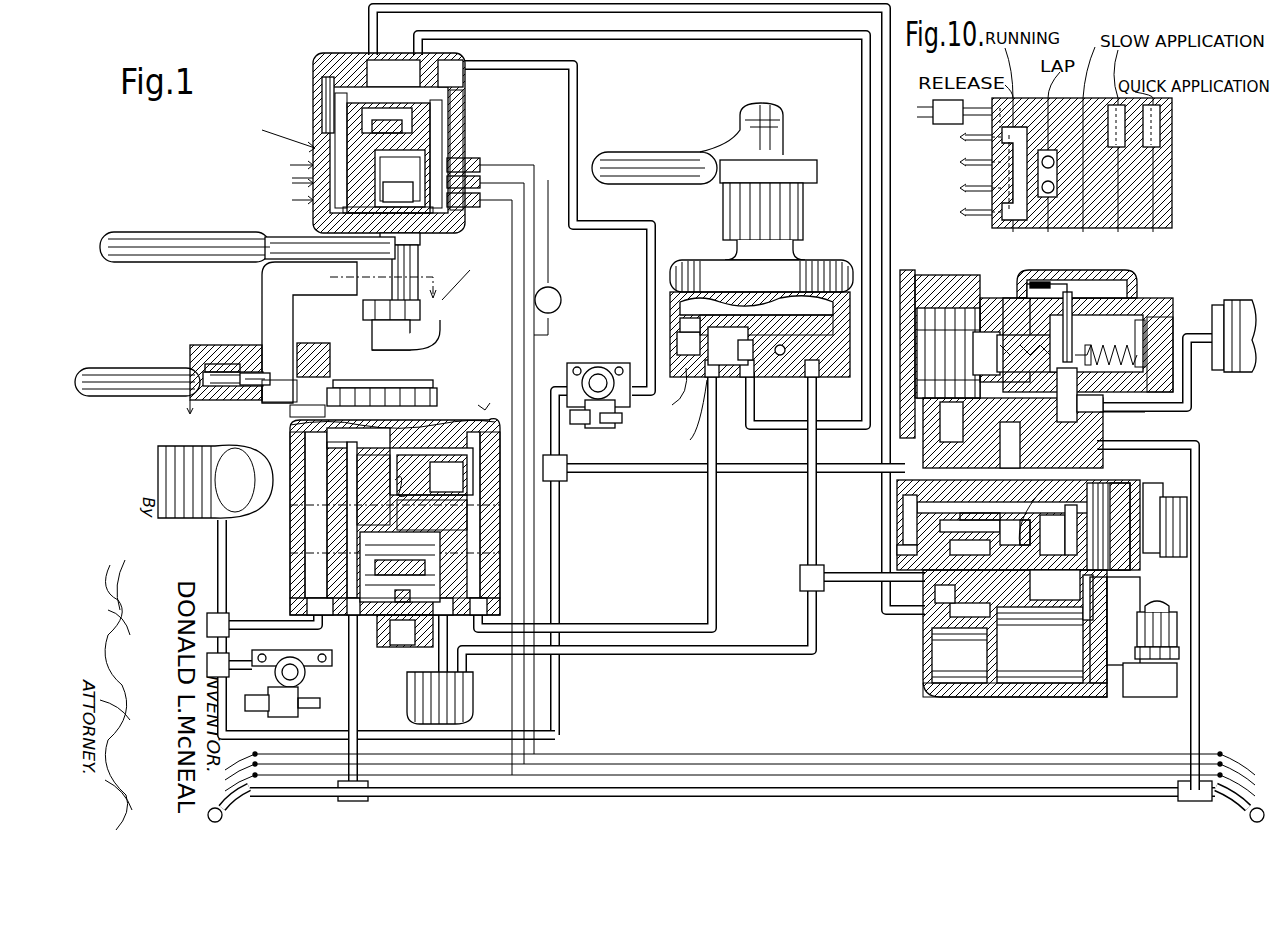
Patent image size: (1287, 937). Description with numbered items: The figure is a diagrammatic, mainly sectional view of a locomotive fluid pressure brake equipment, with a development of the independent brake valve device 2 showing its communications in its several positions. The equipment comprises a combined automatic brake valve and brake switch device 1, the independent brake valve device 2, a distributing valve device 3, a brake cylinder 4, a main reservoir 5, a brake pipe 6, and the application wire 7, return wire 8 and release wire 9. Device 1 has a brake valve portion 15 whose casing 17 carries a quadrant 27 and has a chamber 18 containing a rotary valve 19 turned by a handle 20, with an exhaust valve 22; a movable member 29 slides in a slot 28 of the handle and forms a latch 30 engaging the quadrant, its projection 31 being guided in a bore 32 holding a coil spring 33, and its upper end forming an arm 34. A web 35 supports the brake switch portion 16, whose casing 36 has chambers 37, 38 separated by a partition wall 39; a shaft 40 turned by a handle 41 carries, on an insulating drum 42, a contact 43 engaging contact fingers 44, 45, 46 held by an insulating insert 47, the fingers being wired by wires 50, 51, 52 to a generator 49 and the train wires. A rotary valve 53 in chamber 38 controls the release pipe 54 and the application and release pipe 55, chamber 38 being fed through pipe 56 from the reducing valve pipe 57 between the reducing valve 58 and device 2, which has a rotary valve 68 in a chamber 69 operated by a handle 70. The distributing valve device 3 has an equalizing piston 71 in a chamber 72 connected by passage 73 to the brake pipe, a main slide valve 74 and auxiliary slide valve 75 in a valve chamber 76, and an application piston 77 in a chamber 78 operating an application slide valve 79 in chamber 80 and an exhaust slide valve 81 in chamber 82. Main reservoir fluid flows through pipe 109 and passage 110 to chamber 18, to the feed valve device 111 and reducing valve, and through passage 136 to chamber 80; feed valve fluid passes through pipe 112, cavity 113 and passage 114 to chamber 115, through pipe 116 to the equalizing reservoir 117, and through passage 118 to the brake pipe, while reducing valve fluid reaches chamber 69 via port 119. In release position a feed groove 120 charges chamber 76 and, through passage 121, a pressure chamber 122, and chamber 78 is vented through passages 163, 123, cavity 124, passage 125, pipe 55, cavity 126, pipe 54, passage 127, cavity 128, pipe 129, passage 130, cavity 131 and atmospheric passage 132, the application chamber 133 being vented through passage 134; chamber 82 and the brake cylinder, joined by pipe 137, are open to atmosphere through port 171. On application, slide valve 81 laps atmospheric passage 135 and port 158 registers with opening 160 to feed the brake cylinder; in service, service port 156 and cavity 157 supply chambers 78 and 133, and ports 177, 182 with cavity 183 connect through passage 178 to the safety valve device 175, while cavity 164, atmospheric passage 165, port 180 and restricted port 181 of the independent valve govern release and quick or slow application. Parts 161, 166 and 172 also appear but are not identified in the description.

In FIG. 1, the combined automatic brake valve and brake switch device 1 is at (460, 283).
In FIG. 1, the independent brake valve device 2 is at (813, 200).
In FIG. 1, the distributing valve device 3 is at (1055, 275).
In FIG. 1, the brake cylinder 4 is at (1240, 300).
In FIG. 1, the main reservoir 5 is at (180, 458).
In FIG. 1, the brake pipe 6 is at (672, 796).
In FIG. 1, the application wire 7 is at (655, 740).
In FIG. 1, the return wire 8 is at (686, 762).
In FIG. 1, the release wire 9 is at (733, 760).
In FIG. 1, the brake valve portion 15 is at (397, 494).
In FIG. 1, the brake switch portion 16 is at (312, 148).
In FIG. 1, the casing 17 is at (280, 400).
In FIG. 1, the chamber 18 is at (442, 420).
In FIG. 1, the rotary valve 19 is at (297, 428).
In FIG. 1, the handle 20 is at (105, 368).
In FIG. 1, the exhaust valve 22 is at (378, 612).
In FIG. 1, the quadrant 27 is at (432, 382).
In FIG. 1, the longitudinal slot 28 is at (372, 335).
In FIG. 1, the movable member 29 is at (263, 278).
In FIG. 1, the latch 30 is at (310, 378).
In FIG. 1, the projection 31 is at (250, 388).
In FIG. 1, the bore 32 is at (220, 364).
In FIG. 1, the coil spring 33 is at (205, 365).
In FIG. 1, the inwardly extending arm 34 is at (315, 270).
In FIG. 1, the web 35 is at (440, 250).
In FIG. 1, the casing 36 is at (465, 105).
In FIG. 1, the chamber 37 is at (272, 133).
In FIG. 1, the chamber 38 is at (340, 102).
In FIG. 1, the partition wall 39 is at (332, 130).
In FIG. 1, the rotatable shaft 40 is at (455, 222).
In FIG. 1, the handle 41 is at (140, 232).
In FIG. 1, the sleeve or drum 42 is at (345, 211).
In FIG. 1, the contact 43 is at (358, 160).
In FIG. 1, the contact finger 44 is at (412, 128).
In FIG. 1, the contact finger 45 is at (400, 178).
In FIG. 1, the contact finger 46 is at (398, 190).
In FIG. 1, the insulating insert 47 is at (470, 158).
In FIG. 1, the generator 49 is at (557, 292).
In FIG. 1, the wire 50 is at (540, 545).
In FIG. 1, the wire 51 is at (530, 568).
In FIG. 1, the wire 52 is at (518, 590).
In FIG. 1, the rotary valve 53 is at (465, 84).
In FIG. 1, the release pipe 54 is at (418, 48).
In FIG. 1, the application and release pipe 55 is at (368, 55).
In FIG. 1, the passage and pipe 56 is at (472, 68).
In FIG. 1, the reducing valve pipe 57 is at (668, 396).
In FIG. 10, the reducing valve pipe 57 is at (933, 118).
In FIG. 1, the reducing valve 58 is at (596, 368).
In FIG. 1, the rotary valve 68 is at (825, 285).
In FIG. 1, the chamber 69 is at (790, 280).
In FIG. 10, the chamber 69 is at (933, 106).
In FIG. 1, the handle 70 is at (625, 160).
In FIG. 1, the equalizing piston 71 is at (1115, 630).
In FIG. 1, the chamber 72 is at (1187, 505).
In FIG. 1, the passage 73 is at (1188, 455).
In FIG. 1, the main slide valve 74 is at (1068, 515).
In FIG. 1, the auxiliary slide valve 75 is at (1025, 490).
In FIG. 1, the valve chamber 76 is at (990, 515).
In FIG. 1, the application piston 77 is at (930, 290).
In FIG. 1, the application piston chamber 78 is at (908, 270).
In FIG. 1, the application slide valve 79 is at (1070, 292).
In FIG. 1, the chamber 80 is at (1037, 280).
In FIG. 1, the exhaust slide valve 81 is at (1000, 330).
In FIG. 1, the chamber 82 is at (1143, 305).
In FIG. 1, the pipe 109 is at (225, 590).
In FIG. 1, the passage 110 is at (310, 525).
In FIG. 1, the feed valve device 111 is at (292, 676).
In FIG. 1, the pipe and passage 112 is at (305, 598).
In FIG. 1, the cavity 113 is at (355, 513).
In FIG. 1, the passage 114 is at (386, 490).
In FIG. 1, the chamber 115 is at (432, 516).
In FIG. 1, the passage and pipe 116 is at (432, 612).
In FIG. 1, the equalizing reservoir 117 is at (460, 696).
In FIG. 1, the passage 118 is at (345, 545).
In FIG. 1, the port 119 is at (680, 322).
In FIG. 1, the feed groove 120 is at (1100, 448).
In FIG. 1, the passage 121 is at (400, 566).
In FIG. 1, the pressure chamber 122 is at (1060, 690).
In FIG. 1, the passage 123 is at (957, 600).
In FIG. 1, the cavity 124 is at (990, 520).
In FIG. 1, the passage 125 is at (1040, 645).
In FIG. 1, the cavity 126 is at (320, 88).
In FIG. 1, the passage 127 is at (765, 345).
In FIG. 10, the passage 127 is at (959, 196).
In FIG. 1, the cavity 128 is at (766, 314).
In FIG. 10, the cavity 128 is at (1082, 175).
In FIG. 1, the passage and pipe 129 is at (683, 416).
In FIG. 10, the passage and pipe 129 is at (961, 169).
In FIG. 1, the passage 130 is at (558, 520).
In FIG. 1, the cavity 131 is at (431, 461).
In FIG. 1, the atmospheric passage 132 is at (415, 488).
In FIG. 1, the application chamber 133 is at (925, 670).
In FIG. 1, the passage 134 is at (959, 655).
In FIG. 1, the atmospheric passage 135 is at (1048, 405).
In FIG. 1, the passage 136 is at (1013, 433).
In FIG. 1, the passage and pipe 137 is at (1120, 412).
In FIG. 1, the service port 156 is at (903, 515).
In FIG. 1, the cavity 157 is at (903, 548).
In FIG. 1, the port 158 is at (1030, 290).
In FIG. 1, the opening 160 is at (1098, 330).
In FIG. 1, the passage 161 is at (985, 408).
In FIG. 1, the passage and pipe 163 is at (806, 540).
In FIG. 10, the passage and pipe 163 is at (961, 143).
In FIG. 10, the cavity 164 is at (1030, 135).
In FIG. 1, the atmospheric passage 165 is at (770, 350).
In FIG. 10, the atmospheric passage 165 is at (961, 220).
In FIG. 1, the piston 166 is at (958, 308).
In FIG. 1, the port 171 is at (1102, 341).
In FIG. 1, the chamber 172 is at (450, 477).
In FIG. 1, the safety valve device 175 is at (1150, 612).
In FIG. 1, the port 177 is at (1055, 591).
In FIG. 1, the passage 178 is at (1083, 622).
In FIG. 10, the port 180 is at (1160, 118).
In FIG. 10, the restricted port 181 is at (1125, 140).
In FIG. 1, the port 182 is at (1112, 526).
In FIG. 1, the cavity 183 is at (1042, 507).